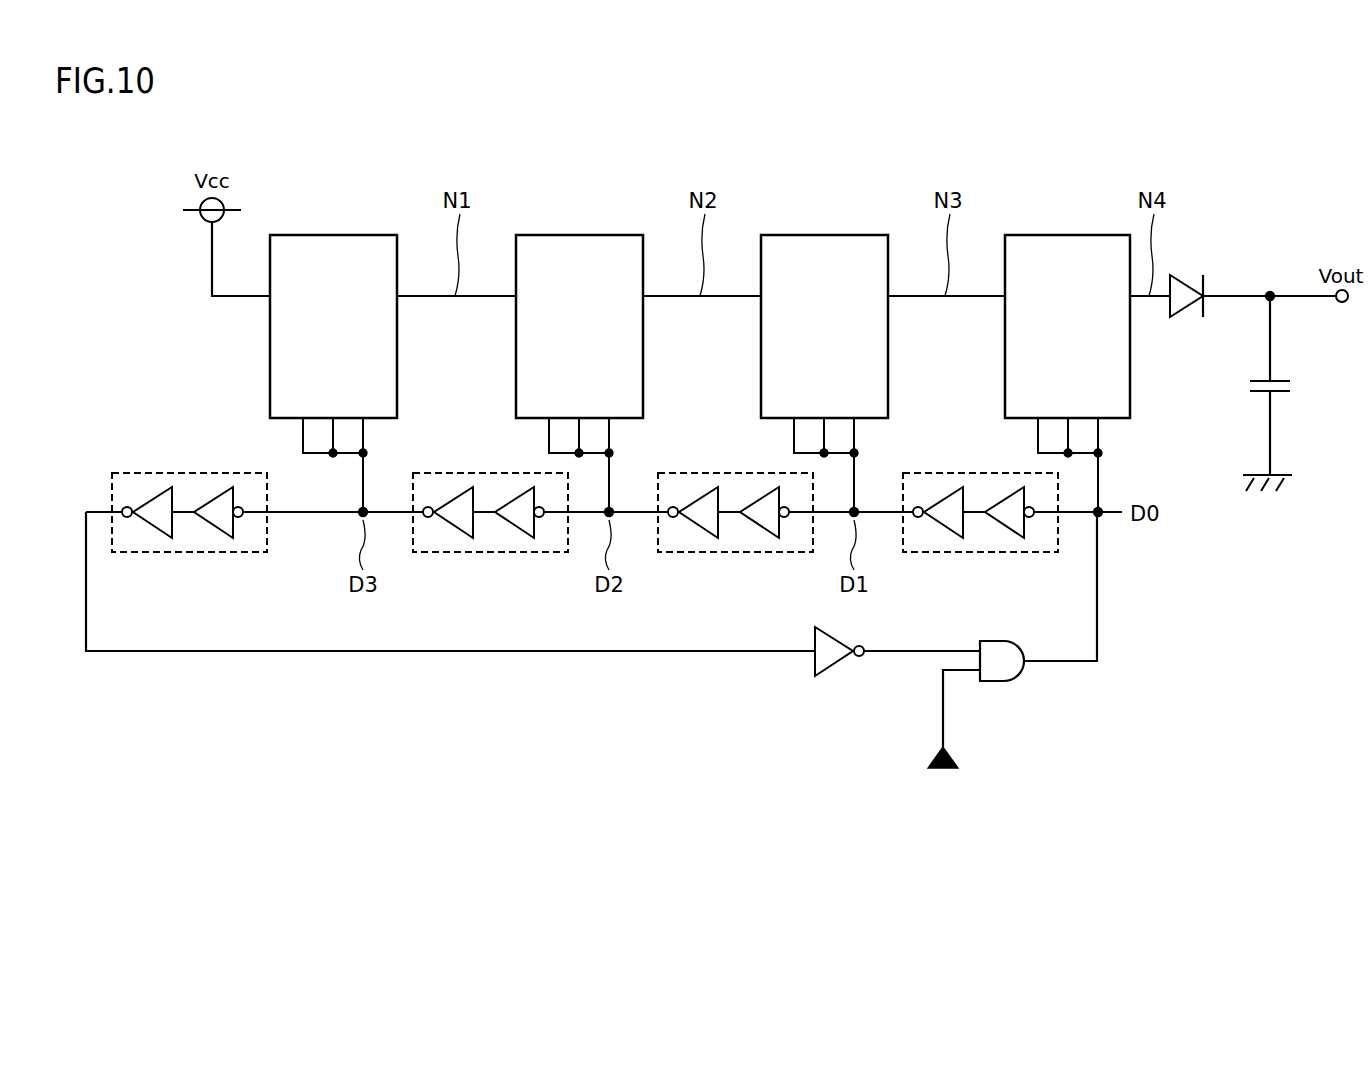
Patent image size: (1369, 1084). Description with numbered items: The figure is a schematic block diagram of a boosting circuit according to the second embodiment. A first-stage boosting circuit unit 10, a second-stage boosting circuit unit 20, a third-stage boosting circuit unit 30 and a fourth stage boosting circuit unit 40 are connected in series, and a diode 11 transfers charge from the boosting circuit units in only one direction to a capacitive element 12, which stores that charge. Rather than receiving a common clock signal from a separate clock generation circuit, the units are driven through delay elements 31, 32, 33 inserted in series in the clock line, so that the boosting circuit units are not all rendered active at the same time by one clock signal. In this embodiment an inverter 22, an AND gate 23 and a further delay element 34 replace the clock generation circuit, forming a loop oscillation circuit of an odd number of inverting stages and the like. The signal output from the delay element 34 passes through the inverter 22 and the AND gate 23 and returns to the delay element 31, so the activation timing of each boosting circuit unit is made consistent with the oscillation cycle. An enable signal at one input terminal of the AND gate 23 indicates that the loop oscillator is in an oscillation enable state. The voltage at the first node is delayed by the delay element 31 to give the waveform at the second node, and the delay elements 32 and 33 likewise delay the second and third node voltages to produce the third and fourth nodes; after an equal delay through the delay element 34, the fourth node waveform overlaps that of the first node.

The first-stage boosting circuit unit 10 is at (361, 234).
The second-stage boosting circuit unit 20 is at (603, 234).
The third-stage boosting circuit unit 30 is at (851, 234).
The fourth stage boosting circuit unit 40 is at (1095, 234).
The diode 11 is at (1194, 318).
The capacitive element 12 is at (1278, 368).
The inverter 22 is at (838, 672).
The AND gate 23 is at (1020, 683).
The delay element 31 is at (981, 553).
The delay element 32 is at (736, 553).
The delay element 33 is at (491, 553).
The delay element 34 is at (190, 553).